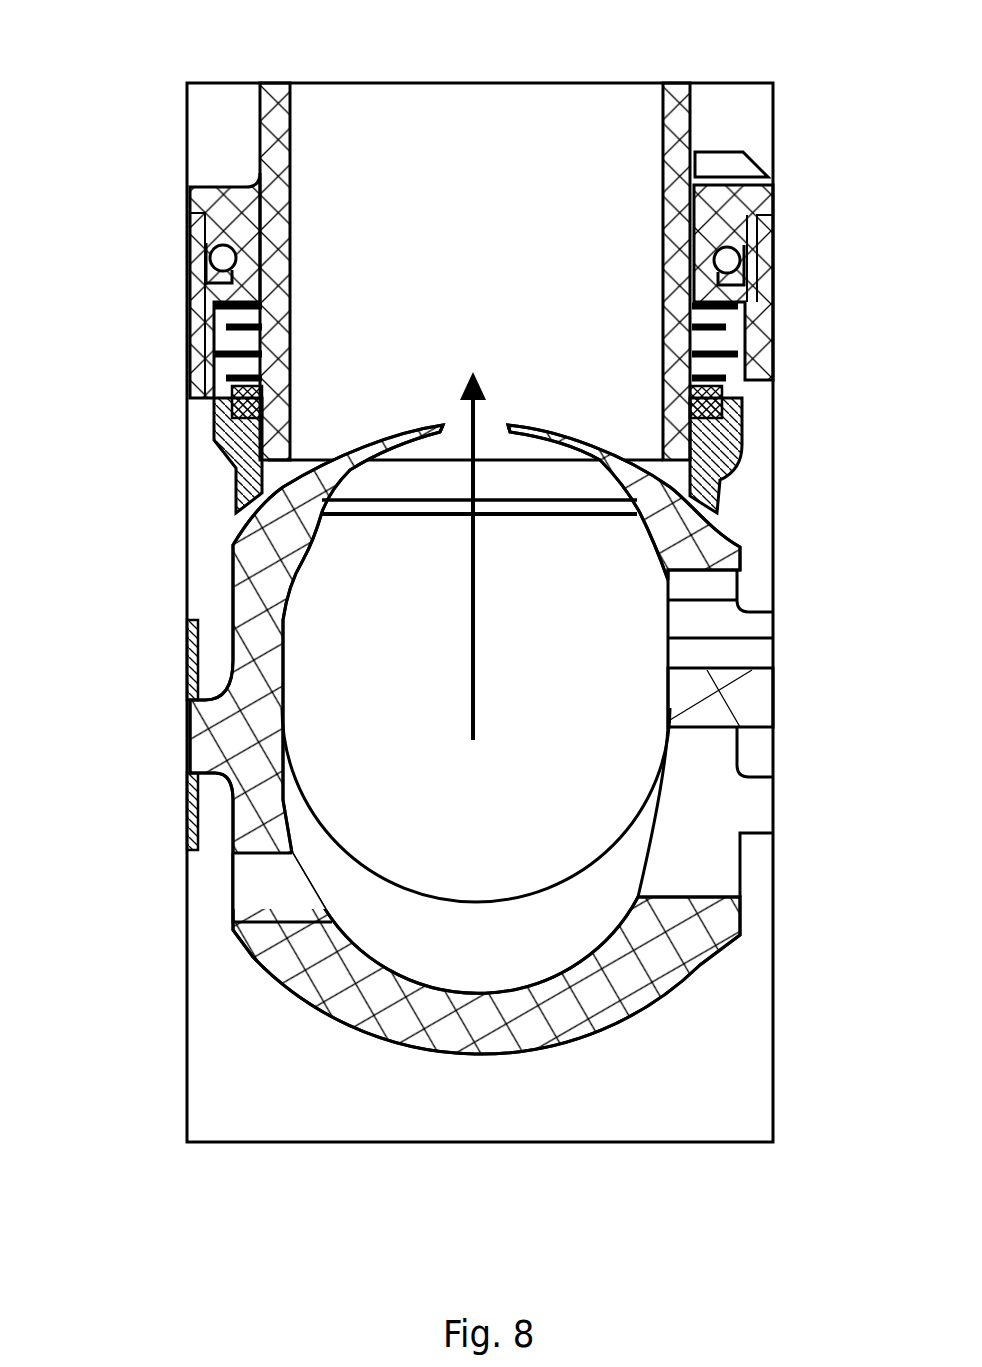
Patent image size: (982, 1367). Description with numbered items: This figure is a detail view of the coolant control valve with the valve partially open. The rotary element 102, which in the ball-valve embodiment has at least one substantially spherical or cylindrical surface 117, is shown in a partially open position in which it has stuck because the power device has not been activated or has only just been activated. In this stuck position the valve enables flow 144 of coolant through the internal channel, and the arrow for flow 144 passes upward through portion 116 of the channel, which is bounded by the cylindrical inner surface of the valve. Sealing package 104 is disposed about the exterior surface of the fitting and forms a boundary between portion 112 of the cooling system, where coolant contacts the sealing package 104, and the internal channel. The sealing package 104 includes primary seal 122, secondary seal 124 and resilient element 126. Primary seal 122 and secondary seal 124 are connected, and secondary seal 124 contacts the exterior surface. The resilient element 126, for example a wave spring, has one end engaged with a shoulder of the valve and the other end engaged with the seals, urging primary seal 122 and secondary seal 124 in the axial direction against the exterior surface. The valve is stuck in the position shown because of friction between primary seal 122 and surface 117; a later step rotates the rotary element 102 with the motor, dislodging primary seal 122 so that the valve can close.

The rotary element 102 is at (607, 443).
The sealing package 104 is at (196, 455).
The portion of cooling system 112 is at (225, 336).
The portion of channel 116 is at (573, 108).
The substantially spherical or cylindrical surface 117 is at (553, 425).
The primary seal 122 is at (240, 487).
The secondary seal 124 is at (240, 397).
The resilient element 126 is at (228, 340).
The flow 144 is at (470, 692).